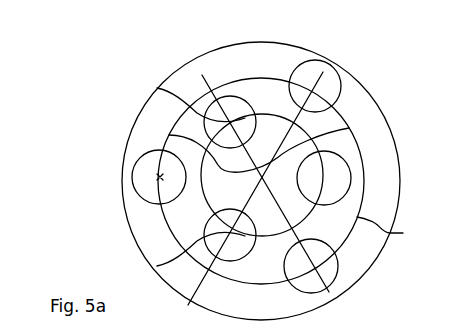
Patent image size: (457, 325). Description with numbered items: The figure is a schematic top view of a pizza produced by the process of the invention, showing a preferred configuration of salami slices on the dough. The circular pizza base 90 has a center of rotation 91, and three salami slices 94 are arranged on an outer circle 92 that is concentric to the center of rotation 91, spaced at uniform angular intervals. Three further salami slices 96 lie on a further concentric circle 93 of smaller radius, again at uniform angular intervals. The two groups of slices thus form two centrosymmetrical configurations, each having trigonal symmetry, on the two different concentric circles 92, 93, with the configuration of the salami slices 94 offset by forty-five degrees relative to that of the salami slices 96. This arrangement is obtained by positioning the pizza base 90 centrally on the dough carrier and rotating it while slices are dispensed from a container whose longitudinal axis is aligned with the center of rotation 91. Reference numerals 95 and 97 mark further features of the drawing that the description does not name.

The pizza base 90 is at (363, 90).
The center of rotation 91 is at (169, 135).
The outer circle 92 is at (390, 231).
The further concentric circle 93 is at (353, 123).
The salami slices 94 is at (314, 66).
The center mark 95 is at (136, 190).
The further salami slices 96 is at (230, 97).
The spiral web 97 is at (158, 89).